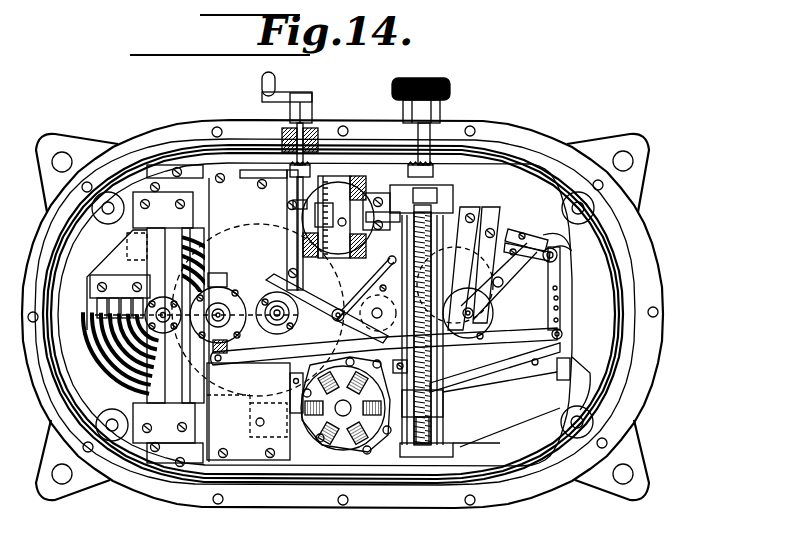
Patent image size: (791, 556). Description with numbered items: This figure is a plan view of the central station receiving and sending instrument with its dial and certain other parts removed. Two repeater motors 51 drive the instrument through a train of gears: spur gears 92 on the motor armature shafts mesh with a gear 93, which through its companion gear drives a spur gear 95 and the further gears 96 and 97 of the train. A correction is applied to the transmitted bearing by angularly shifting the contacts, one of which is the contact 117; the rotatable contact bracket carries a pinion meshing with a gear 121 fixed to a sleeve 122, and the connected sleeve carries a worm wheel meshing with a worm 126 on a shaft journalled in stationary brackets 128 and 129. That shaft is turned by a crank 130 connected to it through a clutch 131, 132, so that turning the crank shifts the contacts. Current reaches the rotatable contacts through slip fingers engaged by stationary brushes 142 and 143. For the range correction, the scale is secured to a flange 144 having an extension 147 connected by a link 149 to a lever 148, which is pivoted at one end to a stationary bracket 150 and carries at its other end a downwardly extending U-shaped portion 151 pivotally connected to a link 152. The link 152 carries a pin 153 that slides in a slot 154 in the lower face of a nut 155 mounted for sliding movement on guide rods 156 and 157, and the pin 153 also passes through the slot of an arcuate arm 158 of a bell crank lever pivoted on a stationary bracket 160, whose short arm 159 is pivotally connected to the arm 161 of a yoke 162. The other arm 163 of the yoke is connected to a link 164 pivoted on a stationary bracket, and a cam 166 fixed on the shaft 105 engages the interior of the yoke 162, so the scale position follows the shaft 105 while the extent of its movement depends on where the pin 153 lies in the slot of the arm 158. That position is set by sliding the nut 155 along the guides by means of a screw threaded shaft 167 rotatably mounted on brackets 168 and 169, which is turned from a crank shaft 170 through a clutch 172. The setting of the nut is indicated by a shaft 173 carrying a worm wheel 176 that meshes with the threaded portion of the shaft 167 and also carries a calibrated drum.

The repeater motor 51 is at (312, 176).
The spur gear 92 is at (317, 450).
The gear 93 is at (251, 416).
The spur gear 95 is at (304, 392).
The gear 96 is at (379, 301).
The gear 97 is at (533, 360).
The shaft 105 is at (480, 306).
The contact 117 is at (445, 92).
The gear 121 is at (427, 157).
The sleeve 122 is at (295, 233).
The worm 126 is at (340, 311).
The stationary bracket 128 is at (305, 295).
The stationary bracket 129 is at (300, 408).
The crank 130 is at (287, 93).
The clutch 131 is at (280, 136).
The clutch 132 is at (290, 172).
The stationary brush 142 is at (110, 315).
The stationary brush 143 is at (175, 360).
The flange 144 is at (228, 280).
The extension 147 is at (238, 316).
The lever 148 is at (560, 290).
The link 149 is at (278, 365).
The stationary bracket 150 is at (540, 229).
The U-shaped portion 151 is at (576, 360).
The link 152 is at (527, 382).
The pin 153 is at (443, 405).
The slot 154 is at (362, 453).
The nut 155 is at (443, 425).
The guide rod 156 is at (400, 258).
The guide rod 157 is at (433, 227).
The slotted arcuate arm 158 is at (389, 362).
The short arm 159 is at (437, 377).
The stationary bracket 160 is at (432, 262).
The arm 161 is at (478, 338).
The yoke 162 is at (493, 320).
The arm 163 is at (500, 284).
The link 164 is at (499, 262).
The cam 166 is at (495, 367).
The screw threaded shaft 167 is at (422, 447).
The bracket 168 is at (432, 185).
The bracket 169 is at (413, 455).
The crank shaft 170 is at (420, 157).
The clutch 172 is at (410, 172).
The shaft 173 is at (368, 232).
The worm wheel 176 is at (437, 198).